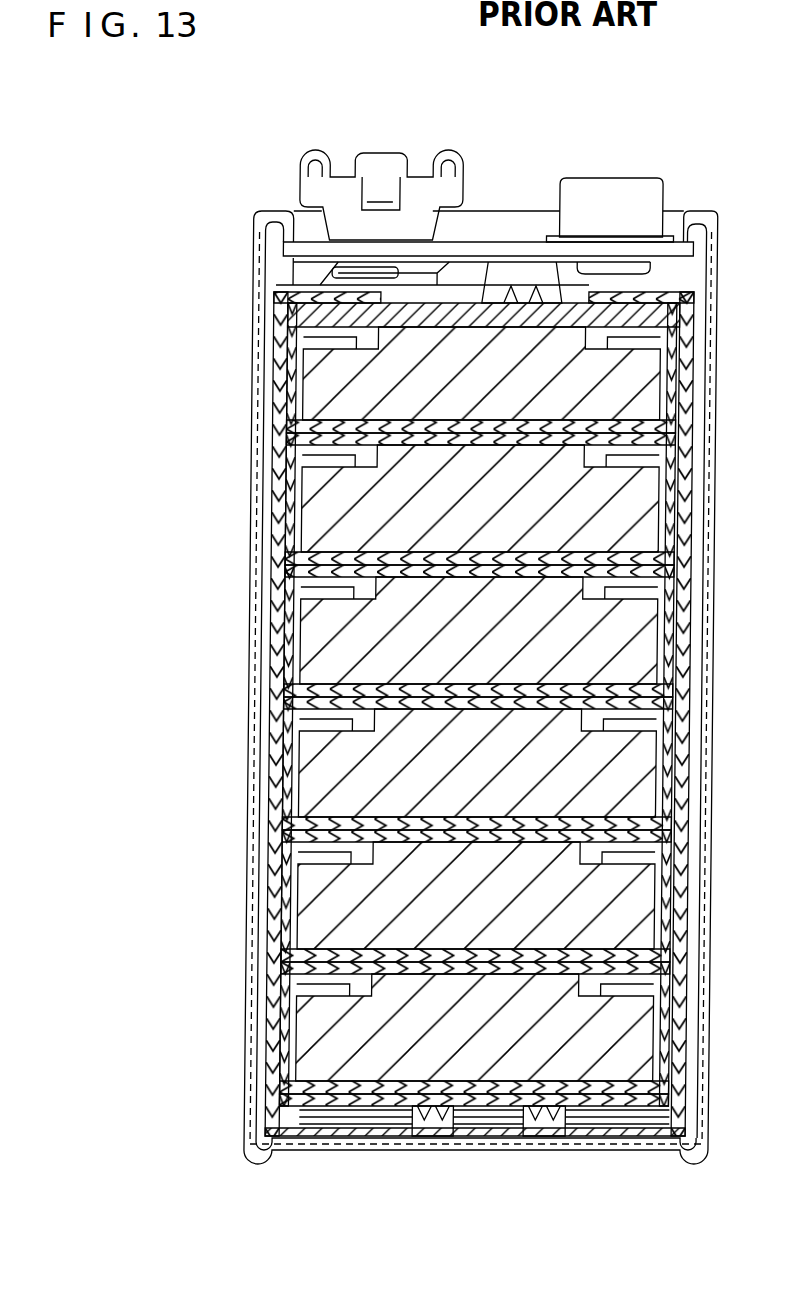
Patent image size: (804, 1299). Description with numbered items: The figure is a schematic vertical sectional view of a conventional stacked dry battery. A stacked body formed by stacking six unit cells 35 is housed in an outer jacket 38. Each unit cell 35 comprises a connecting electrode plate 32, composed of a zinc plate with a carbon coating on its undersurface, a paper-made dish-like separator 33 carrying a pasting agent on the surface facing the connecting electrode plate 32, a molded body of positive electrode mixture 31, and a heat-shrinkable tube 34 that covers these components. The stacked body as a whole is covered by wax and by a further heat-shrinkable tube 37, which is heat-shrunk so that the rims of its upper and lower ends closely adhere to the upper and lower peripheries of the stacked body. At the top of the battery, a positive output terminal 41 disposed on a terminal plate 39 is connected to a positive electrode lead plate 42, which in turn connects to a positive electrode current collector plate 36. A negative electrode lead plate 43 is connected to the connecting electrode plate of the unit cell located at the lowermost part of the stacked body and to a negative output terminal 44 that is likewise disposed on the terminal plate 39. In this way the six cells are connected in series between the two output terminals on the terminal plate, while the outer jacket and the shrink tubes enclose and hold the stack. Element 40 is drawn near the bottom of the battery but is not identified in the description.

The positive electrode mixture 31 is at (335, 376).
The connecting electrode plate 32 is at (306, 438).
The separator 33 is at (302, 400).
The heat-shrinkable tube 34 is at (296, 344).
The unit cell 35 is at (163, 498).
The positive electrode current collector plate 36 is at (657, 320).
The heat-shrinkable tube 37 is at (684, 688).
The outer jacket 38 is at (262, 1148).
The terminal plate 39 is at (260, 250).
The lead 40 is at (410, 1137).
The positive output terminal 41 is at (605, 203).
The positive electrode lead plate 42 is at (506, 277).
The negative electrode lead plate 43 is at (564, 1137).
The negative output terminal 44 is at (377, 175).